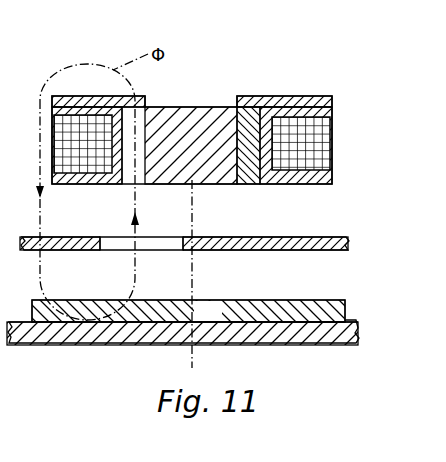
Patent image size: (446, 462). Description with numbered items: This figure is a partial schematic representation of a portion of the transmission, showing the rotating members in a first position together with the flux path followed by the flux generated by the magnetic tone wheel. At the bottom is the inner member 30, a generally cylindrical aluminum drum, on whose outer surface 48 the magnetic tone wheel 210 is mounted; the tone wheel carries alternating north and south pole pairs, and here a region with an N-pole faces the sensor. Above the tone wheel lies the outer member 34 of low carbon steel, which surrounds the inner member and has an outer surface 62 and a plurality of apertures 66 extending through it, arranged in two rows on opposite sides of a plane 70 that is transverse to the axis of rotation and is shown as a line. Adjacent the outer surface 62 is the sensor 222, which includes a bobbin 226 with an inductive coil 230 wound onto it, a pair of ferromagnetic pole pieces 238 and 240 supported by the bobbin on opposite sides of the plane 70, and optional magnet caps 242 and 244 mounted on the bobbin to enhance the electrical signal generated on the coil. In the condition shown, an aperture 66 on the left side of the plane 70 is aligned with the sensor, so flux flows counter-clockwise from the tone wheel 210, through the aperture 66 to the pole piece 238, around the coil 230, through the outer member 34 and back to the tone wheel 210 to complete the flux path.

The sensor 222 is at (367, 59).
The bobbin 226 is at (333, 110).
The inductive coil 230 is at (333, 137).
The pole piece 238 is at (137, 186).
The pole piece 240 is at (245, 184).
The magnet cap 242 is at (88, 96).
The magnet cap 244 is at (268, 96).
The outer member 34 is at (336, 238).
The outer surface 62 is at (76, 237).
The aperture 66 is at (111, 250).
The plane 70 is at (192, 275).
The magnetic tone wheel 210 is at (322, 299).
The outer surface 48 is at (352, 320).
The inner member 30 is at (312, 335).